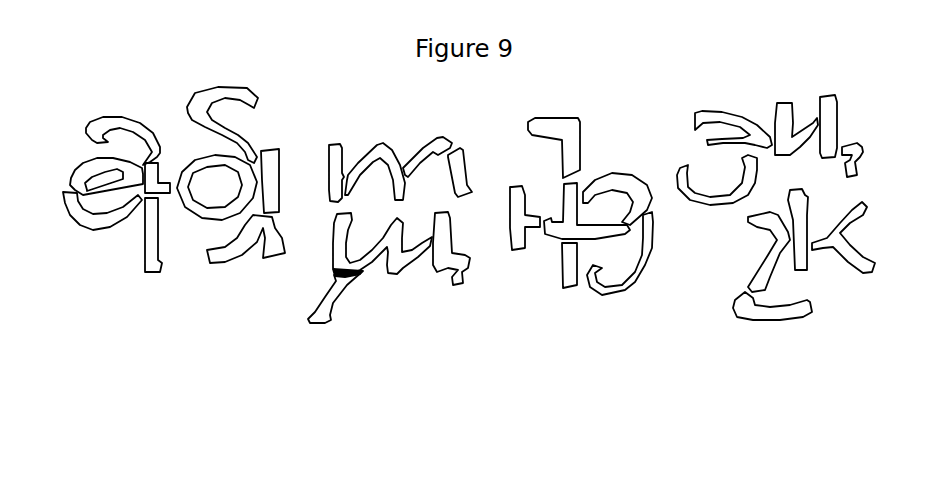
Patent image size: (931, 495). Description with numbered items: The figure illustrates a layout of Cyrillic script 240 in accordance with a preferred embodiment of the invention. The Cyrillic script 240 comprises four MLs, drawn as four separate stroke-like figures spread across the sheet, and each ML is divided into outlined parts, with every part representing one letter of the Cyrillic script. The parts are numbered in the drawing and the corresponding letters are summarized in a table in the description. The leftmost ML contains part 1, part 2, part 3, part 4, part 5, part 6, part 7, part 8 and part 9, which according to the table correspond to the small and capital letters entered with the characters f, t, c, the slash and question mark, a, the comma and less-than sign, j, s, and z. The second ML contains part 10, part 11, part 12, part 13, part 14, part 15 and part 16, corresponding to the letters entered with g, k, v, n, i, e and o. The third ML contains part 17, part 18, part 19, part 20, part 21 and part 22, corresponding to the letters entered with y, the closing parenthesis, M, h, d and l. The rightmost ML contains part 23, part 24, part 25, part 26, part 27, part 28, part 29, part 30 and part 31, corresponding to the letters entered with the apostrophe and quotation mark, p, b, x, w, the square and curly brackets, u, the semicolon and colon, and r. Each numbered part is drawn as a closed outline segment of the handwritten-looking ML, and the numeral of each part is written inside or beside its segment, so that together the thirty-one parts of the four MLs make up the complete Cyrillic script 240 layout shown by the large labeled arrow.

The part 1 is at (123, 141).
The part 2 is at (106, 176).
The part 3 is at (102, 211).
The part 4 is at (157, 178).
The part 5 is at (153, 235).
The part 6 is at (222, 125).
The part 7 is at (217, 187).
The part 8 is at (270, 181).
The part 9 is at (246, 239).
The part 10 is at (329, 173).
The part 11 is at (375, 171).
The part 12 is at (427, 157).
The part 13 is at (460, 172).
The part 14 is at (382, 244).
The part 15 is at (335, 306).
The part 16 is at (451, 248).
The part 17 is at (517, 218).
The part 18 is at (555, 148).
The part 19 is at (587, 211).
The part 20 is at (568, 265).
The part 21 is at (617, 199).
The part 22 is at (620, 253).
The part 23 is at (733, 129).
The part 24 is at (718, 180).
The part 25 is at (796, 129).
The part 26 is at (830, 126).
The part 27 is at (859, 162).
The part 28 is at (769, 252).
The part 29 is at (772, 306).
The part 30 is at (798, 229).
The part 31 is at (843, 240).
The Cyrillic script 240 is at (241, 330).